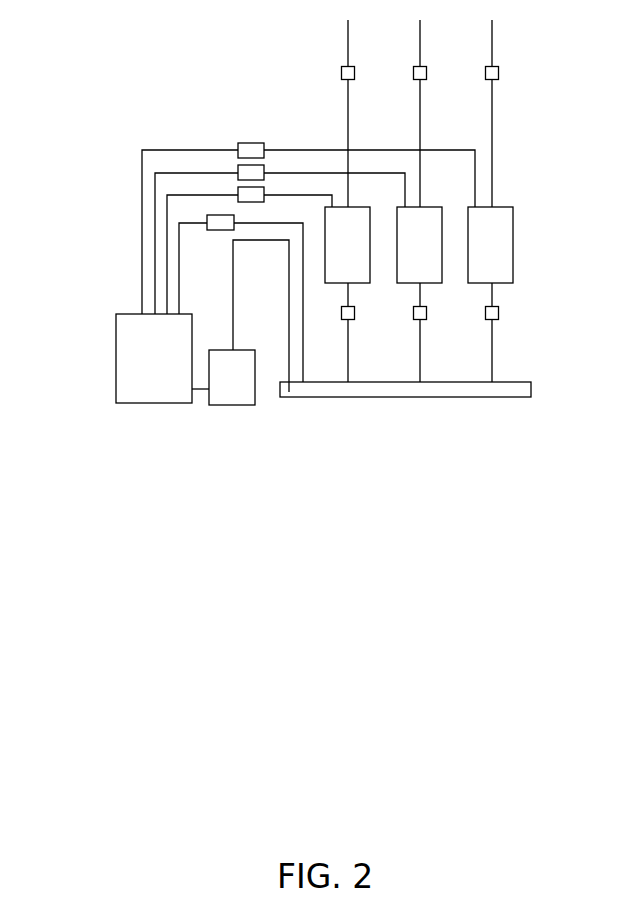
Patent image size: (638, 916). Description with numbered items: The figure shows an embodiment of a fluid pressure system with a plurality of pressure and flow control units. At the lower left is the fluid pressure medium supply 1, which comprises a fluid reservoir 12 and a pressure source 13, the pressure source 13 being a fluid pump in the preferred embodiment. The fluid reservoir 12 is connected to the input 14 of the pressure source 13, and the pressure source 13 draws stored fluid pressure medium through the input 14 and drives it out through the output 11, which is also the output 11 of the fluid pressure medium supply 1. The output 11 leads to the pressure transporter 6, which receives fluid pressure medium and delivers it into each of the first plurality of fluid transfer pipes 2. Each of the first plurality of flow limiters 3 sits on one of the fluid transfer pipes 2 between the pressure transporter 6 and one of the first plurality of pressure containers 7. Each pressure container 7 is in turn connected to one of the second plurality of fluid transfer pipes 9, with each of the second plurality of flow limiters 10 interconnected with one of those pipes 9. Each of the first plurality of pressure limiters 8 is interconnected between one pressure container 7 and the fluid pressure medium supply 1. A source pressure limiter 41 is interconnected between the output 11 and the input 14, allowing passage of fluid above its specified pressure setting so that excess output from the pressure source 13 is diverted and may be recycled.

The fluid pressure medium supply 1 is at (113, 453).
The first plurality of fluid transfer pipes 2 is at (420, 350).
The first plurality of flow limiters 3 is at (427, 313).
The pressure transporter 6 is at (397, 397).
The first plurality of pressure containers 7 is at (362, 284).
The first plurality of pressure limiters 8 is at (253, 143).
The second plurality of fluid transfer pipes 9 is at (420, 118).
The second plurality of flow limiters 10 is at (427, 73).
The output 11 is at (233, 323).
The fluid reservoir 12 is at (116, 353).
The pressure source 13 is at (237, 405).
The input 14 is at (196, 394).
The source pressure limiter 41 is at (212, 231).